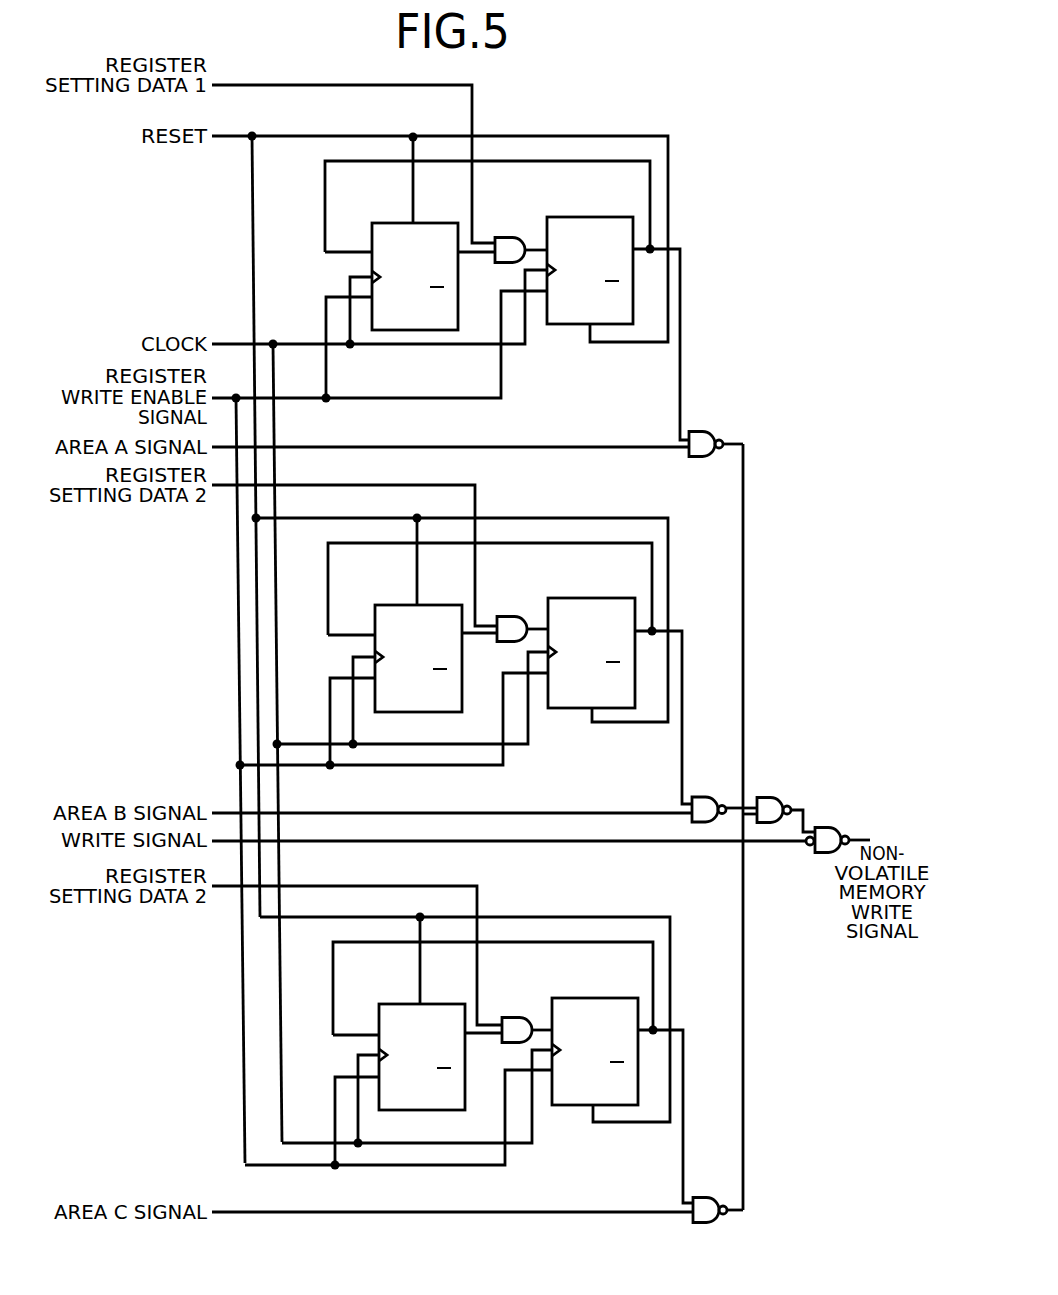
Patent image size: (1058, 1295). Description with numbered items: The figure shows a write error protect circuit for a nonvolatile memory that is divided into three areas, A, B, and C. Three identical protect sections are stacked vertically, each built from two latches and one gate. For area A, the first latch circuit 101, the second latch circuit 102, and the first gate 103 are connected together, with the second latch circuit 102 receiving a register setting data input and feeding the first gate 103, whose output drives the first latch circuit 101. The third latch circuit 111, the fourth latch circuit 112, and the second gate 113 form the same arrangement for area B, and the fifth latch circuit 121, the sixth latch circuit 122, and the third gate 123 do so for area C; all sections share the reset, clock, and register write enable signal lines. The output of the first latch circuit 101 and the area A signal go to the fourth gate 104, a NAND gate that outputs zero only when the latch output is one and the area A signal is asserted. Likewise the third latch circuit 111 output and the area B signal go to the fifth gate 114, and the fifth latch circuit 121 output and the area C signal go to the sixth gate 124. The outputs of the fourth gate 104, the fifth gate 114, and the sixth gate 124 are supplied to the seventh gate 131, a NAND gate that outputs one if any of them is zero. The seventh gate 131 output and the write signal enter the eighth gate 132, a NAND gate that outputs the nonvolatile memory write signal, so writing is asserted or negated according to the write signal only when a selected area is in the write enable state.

The first latch circuit 101 is at (555, 217).
The second latch circuit 102 is at (438, 223).
The first gate 103 is at (497, 237).
The fourth gate 104 is at (700, 431).
The third latch circuit 111 is at (555, 598).
The fourth latch circuit 112 is at (440, 605).
The second gate 113 is at (500, 616).
The fifth gate 114 is at (700, 797).
The fifth latch circuit 121 is at (562, 998).
The sixth latch circuit 122 is at (443, 1004).
The third gate 123 is at (502, 1017).
The sixth gate 124 is at (703, 1197).
The seventh gate 131 is at (764, 797).
The eighth gate 132 is at (822, 827).